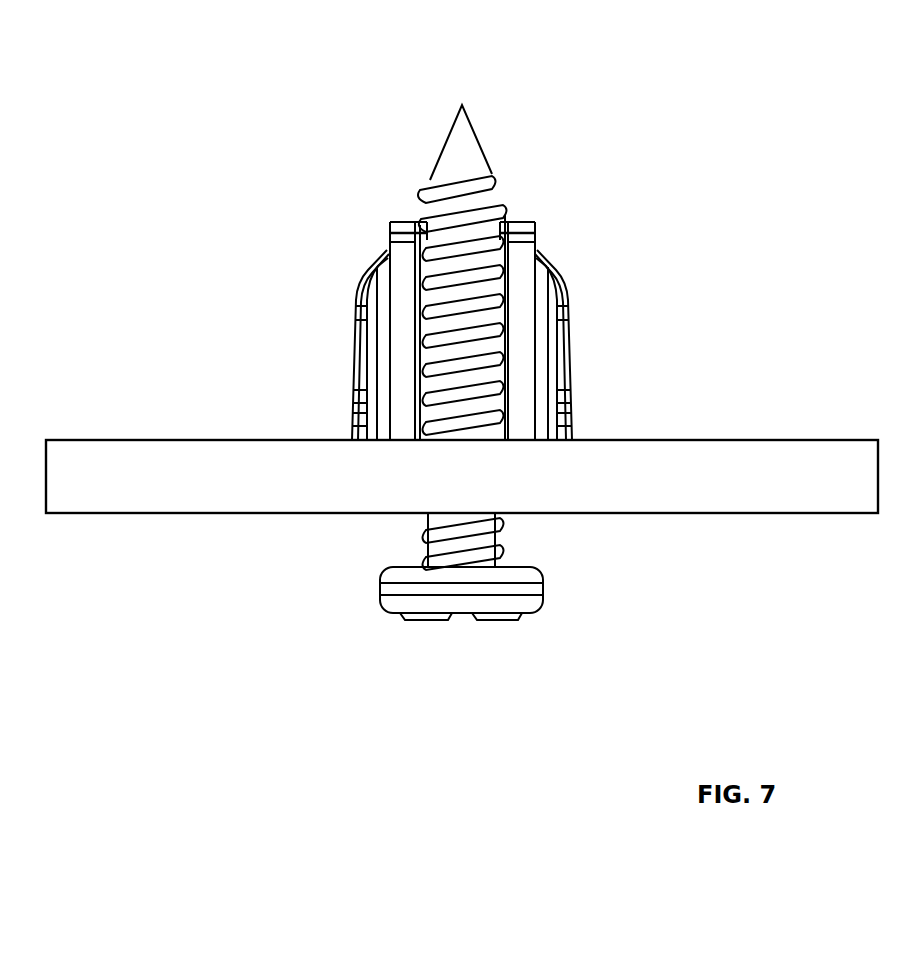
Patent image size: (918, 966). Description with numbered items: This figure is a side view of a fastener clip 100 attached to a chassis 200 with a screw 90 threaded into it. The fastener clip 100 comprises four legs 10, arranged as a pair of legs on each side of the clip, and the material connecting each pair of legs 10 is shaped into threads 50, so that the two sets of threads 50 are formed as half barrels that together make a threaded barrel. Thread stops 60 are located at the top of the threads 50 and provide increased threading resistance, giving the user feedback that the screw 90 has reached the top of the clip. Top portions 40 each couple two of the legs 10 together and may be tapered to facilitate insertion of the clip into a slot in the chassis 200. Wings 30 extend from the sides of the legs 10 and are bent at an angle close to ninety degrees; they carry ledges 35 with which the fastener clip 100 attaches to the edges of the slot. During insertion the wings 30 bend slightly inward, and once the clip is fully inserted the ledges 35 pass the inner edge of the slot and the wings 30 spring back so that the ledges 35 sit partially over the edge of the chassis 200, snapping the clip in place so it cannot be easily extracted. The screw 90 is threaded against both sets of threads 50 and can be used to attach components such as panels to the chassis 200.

The fastener clip 100 is at (670, 88).
The legs 10 is at (407, 300).
The wings 30 is at (367, 322).
The ledges 35 is at (355, 425).
The top portions 40 is at (395, 223).
The threads 50 is at (505, 310).
The thread stops 60 is at (405, 234).
The screw 90 is at (455, 160).
The chassis 200 is at (575, 478).